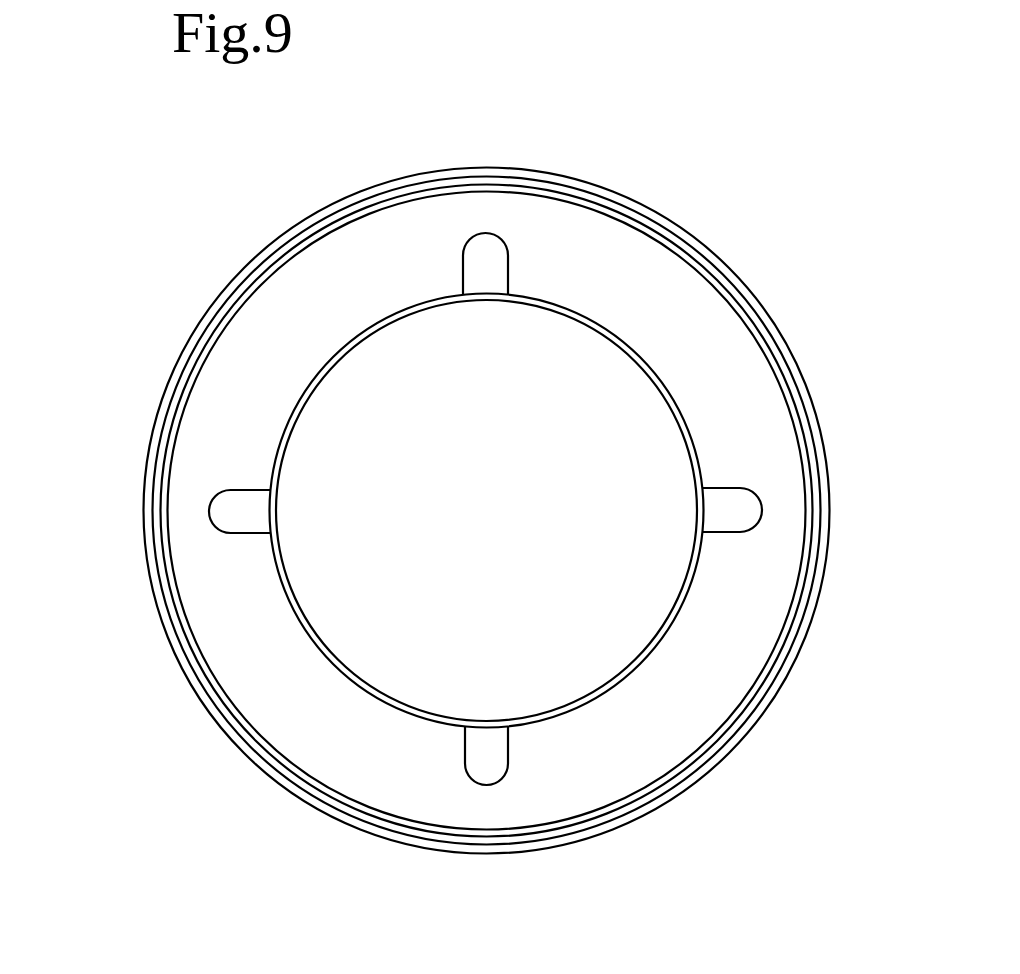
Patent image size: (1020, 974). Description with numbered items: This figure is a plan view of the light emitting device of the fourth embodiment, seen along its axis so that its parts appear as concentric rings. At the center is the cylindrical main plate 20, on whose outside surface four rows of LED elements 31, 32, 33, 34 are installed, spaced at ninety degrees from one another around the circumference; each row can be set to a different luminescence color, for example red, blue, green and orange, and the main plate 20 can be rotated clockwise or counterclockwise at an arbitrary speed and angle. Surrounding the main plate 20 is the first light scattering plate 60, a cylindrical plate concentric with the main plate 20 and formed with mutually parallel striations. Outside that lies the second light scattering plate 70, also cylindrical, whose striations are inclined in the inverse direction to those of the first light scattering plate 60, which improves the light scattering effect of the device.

The main plate 20 is at (613, 327).
The row of LED elements 31 is at (487, 786).
The row of LED elements 32 is at (209, 512).
The row of LED elements 33 is at (483, 233).
The row of LED elements 34 is at (758, 518).
The first light scattering plate 60 is at (777, 379).
The second light scattering plate 70 is at (773, 335).